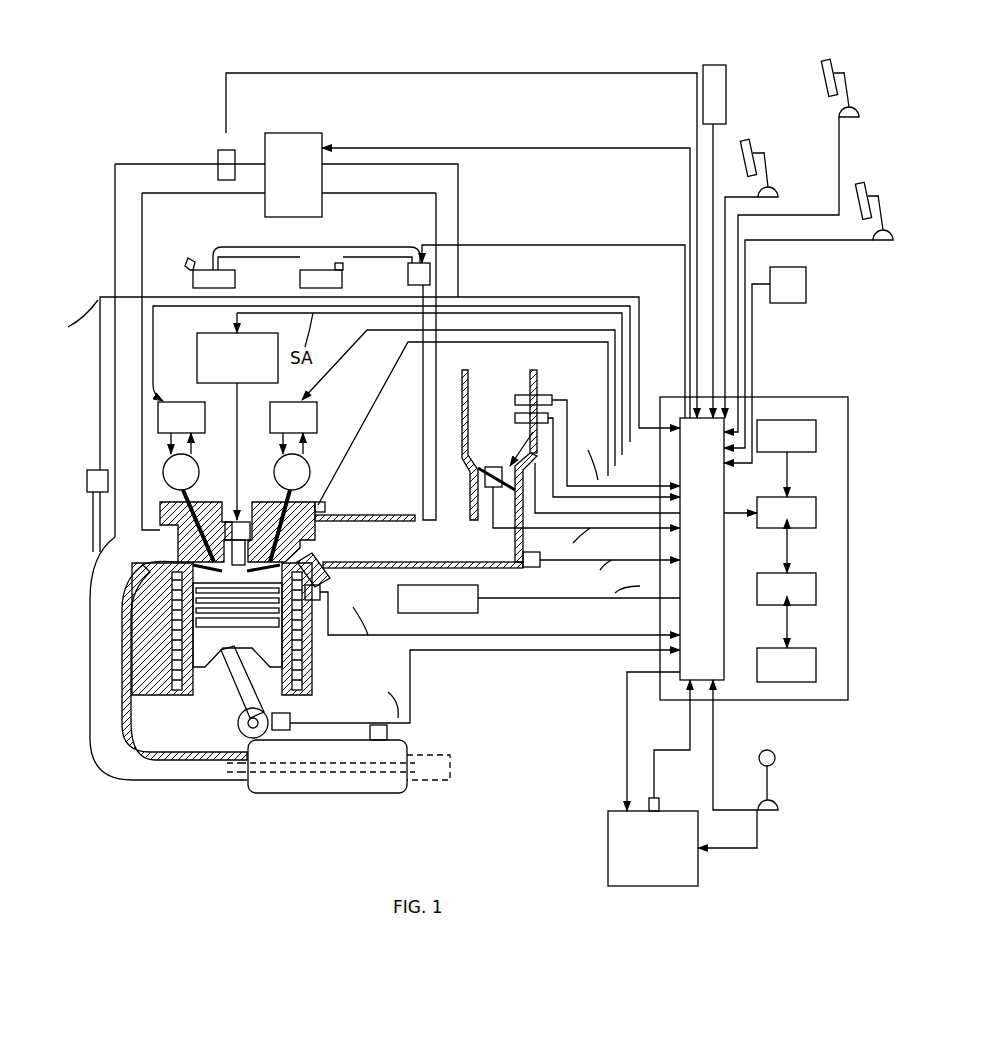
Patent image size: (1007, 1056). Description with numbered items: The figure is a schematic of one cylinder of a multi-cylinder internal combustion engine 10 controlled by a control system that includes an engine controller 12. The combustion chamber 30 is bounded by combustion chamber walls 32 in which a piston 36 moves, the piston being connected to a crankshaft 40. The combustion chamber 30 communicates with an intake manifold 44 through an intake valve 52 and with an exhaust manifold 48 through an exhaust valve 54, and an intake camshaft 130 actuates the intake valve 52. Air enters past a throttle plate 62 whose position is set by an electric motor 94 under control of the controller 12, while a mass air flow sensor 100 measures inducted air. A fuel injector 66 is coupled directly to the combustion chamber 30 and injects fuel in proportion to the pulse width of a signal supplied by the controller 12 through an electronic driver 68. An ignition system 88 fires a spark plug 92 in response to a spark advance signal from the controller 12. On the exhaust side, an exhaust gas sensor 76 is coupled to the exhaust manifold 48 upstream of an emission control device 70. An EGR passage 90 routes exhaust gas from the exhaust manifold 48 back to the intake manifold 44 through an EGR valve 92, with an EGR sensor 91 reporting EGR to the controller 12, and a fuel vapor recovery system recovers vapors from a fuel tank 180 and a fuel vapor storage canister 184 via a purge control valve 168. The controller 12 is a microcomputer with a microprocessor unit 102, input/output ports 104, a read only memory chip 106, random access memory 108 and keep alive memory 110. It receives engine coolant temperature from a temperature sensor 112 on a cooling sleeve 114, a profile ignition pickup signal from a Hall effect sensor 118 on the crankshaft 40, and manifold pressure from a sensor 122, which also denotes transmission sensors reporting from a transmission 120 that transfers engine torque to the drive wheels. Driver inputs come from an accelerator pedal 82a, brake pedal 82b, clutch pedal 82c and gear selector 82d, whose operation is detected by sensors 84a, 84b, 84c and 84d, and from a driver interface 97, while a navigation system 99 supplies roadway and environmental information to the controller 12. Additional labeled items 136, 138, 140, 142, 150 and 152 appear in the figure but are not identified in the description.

The internal combustion engine 10 is at (320, 455).
The engine controller 12 is at (762, 397).
The combustion chamber 30 is at (176, 608).
The combustion chamber walls 32 is at (186, 700).
The piston 36 is at (228, 650).
The crankshaft 40 is at (239, 723).
The intake manifold 44 is at (460, 552).
The exhaust manifold 48 is at (100, 572).
The intake valve 52 is at (250, 522).
The exhaust valve 54 is at (198, 562).
The throttle plate 62 is at (479, 462).
The fuel injector 66 is at (297, 567).
The electronic driver 68 is at (478, 605).
The emission control device 70 is at (318, 745).
The exhaust gas sensor 76 is at (92, 470).
The accelerator pedal 82a is at (764, 152).
The brake pedal 82b is at (846, 70).
The clutch pedal 82c is at (880, 195).
The gear selector 82d is at (775, 763).
The accelerator pedal sensor 84a is at (778, 194).
The brake pedal sensor 84b is at (860, 115).
The clutch pedal sensor 84c is at (893, 237).
The gear selector sensor 84d is at (778, 806).
The ignition system 88 is at (213, 333).
The EGR passage 90 is at (360, 189).
The EGR sensor 91 is at (218, 158).
The spark plug 92 is at (290, 133).
The electric motor 94 is at (492, 467).
The driver interface 97 is at (806, 285).
The navigation system 99 is at (714, 65).
The mass air flow sensor 100 is at (552, 400).
The microprocessor unit 102 is at (816, 512).
The input/output ports 104 is at (727, 497).
The read only memory chip 106 is at (816, 438).
The random access memory 108 is at (816, 590).
The keep alive memory 110 is at (816, 665).
The temperature sensor 112 is at (320, 588).
The cooling sleeve 114 is at (305, 655).
The Hall effect sensor 118 is at (290, 715).
The transmission 120 is at (423, 464).
The sensor 122 is at (540, 565).
The intake camshaft 130 is at (312, 473).
The electric valve actuator 136 is at (311, 429).
The electric valve actuator 138 is at (199, 429).
The air intake 140 is at (513, 405).
The injector port 142 is at (325, 506).
The fuel injector signal 150 is at (347, 352).
The exhaust passage 152 is at (150, 342).
The purge control valve 168 is at (430, 273).
The fuel tank 180 is at (235, 284).
The fuel vapor storage canister 184 is at (342, 283).